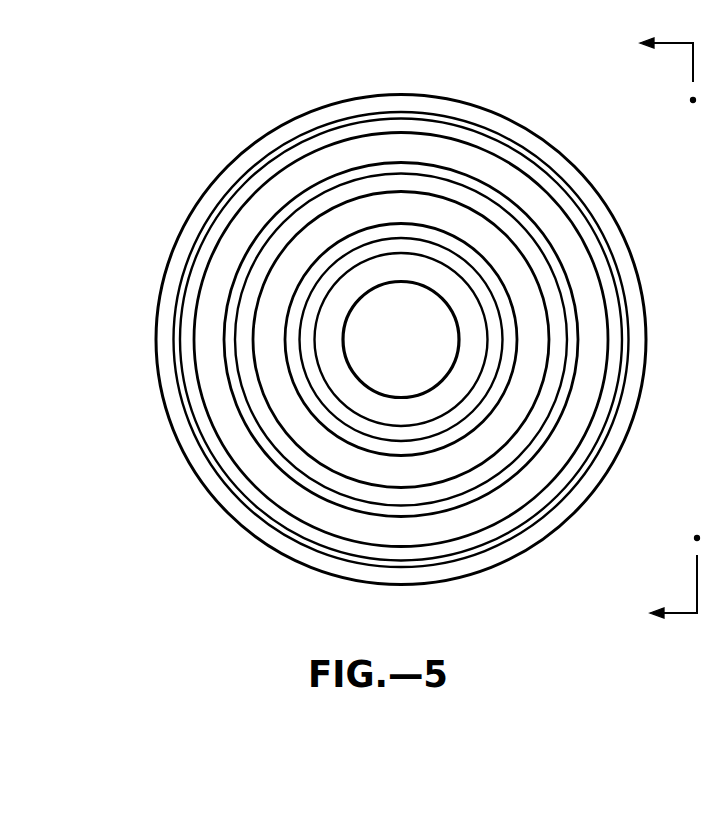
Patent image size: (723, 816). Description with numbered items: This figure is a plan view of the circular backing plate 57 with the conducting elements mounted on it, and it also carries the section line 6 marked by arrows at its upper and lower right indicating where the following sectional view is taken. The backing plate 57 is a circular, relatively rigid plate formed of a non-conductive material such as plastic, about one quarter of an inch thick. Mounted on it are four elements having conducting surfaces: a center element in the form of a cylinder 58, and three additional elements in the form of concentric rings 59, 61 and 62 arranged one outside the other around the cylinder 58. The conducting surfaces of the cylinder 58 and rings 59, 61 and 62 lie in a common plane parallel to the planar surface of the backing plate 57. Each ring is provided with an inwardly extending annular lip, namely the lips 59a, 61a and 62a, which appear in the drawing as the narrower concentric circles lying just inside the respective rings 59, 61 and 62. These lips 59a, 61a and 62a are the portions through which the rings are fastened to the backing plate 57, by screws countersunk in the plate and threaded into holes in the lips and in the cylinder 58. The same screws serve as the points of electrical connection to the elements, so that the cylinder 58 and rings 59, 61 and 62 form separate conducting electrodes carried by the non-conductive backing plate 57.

The backing plate 57 is at (640, 322).
The cylinder 58 is at (388, 354).
The concentric ring 59 is at (297, 288).
The annular lip 59a is at (305, 325).
The concentric ring 61 is at (522, 215).
The annular lip 61a is at (483, 198).
The concentric ring 62 is at (613, 262).
The annular lip 62a is at (590, 233).
The section line 6- 6 is at (657, 330).